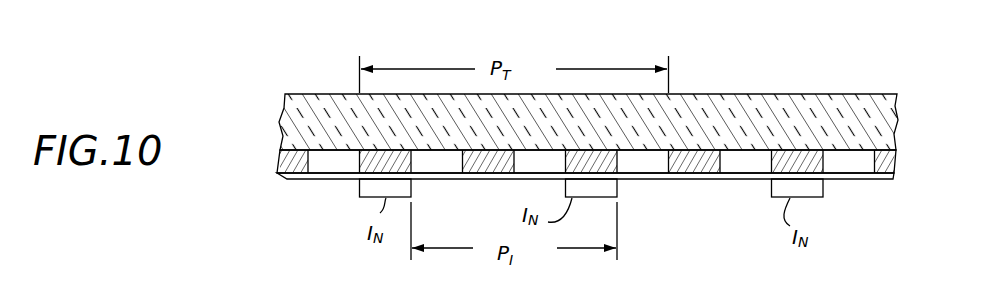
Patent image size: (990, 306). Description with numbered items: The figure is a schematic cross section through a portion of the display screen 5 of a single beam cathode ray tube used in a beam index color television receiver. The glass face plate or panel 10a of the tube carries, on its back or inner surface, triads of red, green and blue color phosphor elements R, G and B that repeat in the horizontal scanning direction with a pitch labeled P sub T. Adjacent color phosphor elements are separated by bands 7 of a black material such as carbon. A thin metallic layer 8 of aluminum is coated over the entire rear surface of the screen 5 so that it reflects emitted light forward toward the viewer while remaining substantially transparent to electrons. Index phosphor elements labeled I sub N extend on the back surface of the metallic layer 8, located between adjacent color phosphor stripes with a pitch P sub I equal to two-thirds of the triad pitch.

The glass face plate or panel 10a is at (847, 79).
The bands of black material 7 is at (353, 173).
The metallic layer 8 is at (290, 180).
The display screen 5 is at (910, 133).